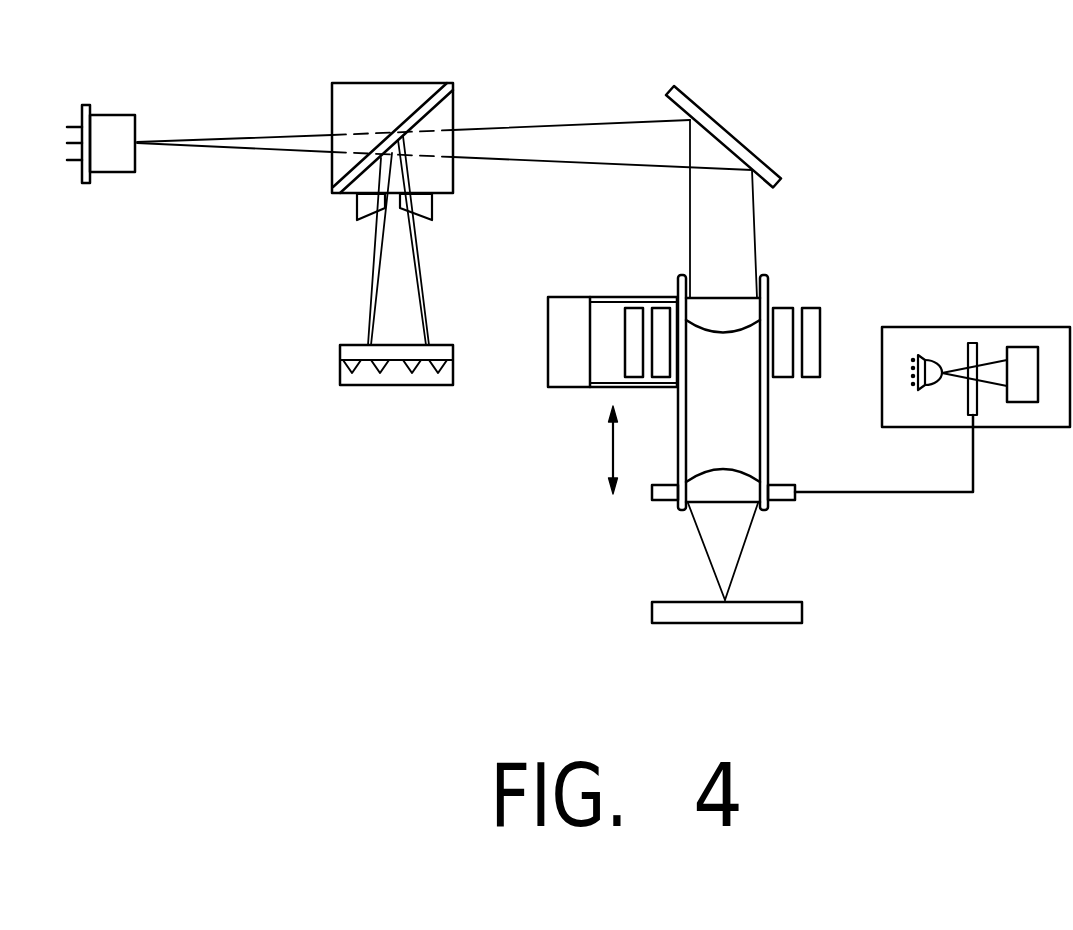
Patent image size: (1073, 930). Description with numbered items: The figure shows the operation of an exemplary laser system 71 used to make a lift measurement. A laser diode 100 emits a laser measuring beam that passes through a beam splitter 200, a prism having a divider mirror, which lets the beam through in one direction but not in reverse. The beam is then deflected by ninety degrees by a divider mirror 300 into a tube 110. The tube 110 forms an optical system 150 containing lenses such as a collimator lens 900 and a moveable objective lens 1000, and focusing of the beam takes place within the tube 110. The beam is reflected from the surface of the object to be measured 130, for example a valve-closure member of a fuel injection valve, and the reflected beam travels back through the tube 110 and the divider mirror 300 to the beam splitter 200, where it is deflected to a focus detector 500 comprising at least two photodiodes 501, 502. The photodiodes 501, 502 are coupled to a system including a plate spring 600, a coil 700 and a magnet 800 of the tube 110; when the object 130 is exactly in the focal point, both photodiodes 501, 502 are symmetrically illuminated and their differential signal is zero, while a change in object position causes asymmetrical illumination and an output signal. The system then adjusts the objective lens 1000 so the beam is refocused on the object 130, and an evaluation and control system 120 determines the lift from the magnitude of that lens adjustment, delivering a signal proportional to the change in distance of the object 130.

The laser system 71 is at (868, 107).
The laser diode 100 is at (113, 122).
The beam splitter 200 is at (368, 93).
The divider mirror 300 is at (742, 138).
The focus detector 500 is at (354, 394).
The photodiode 501 is at (378, 377).
The photodiode 502 is at (438, 375).
The plate spring 600 is at (607, 300).
The coil 700 is at (636, 318).
The magnet 800 is at (662, 360).
The collimator lens 900 is at (722, 310).
The moveable objective lens 1000 is at (752, 492).
The tube 110 is at (796, 437).
The evaluation and control system 120 is at (937, 328).
The object to be measured 130 is at (752, 612).
The optical system 150 is at (566, 474).